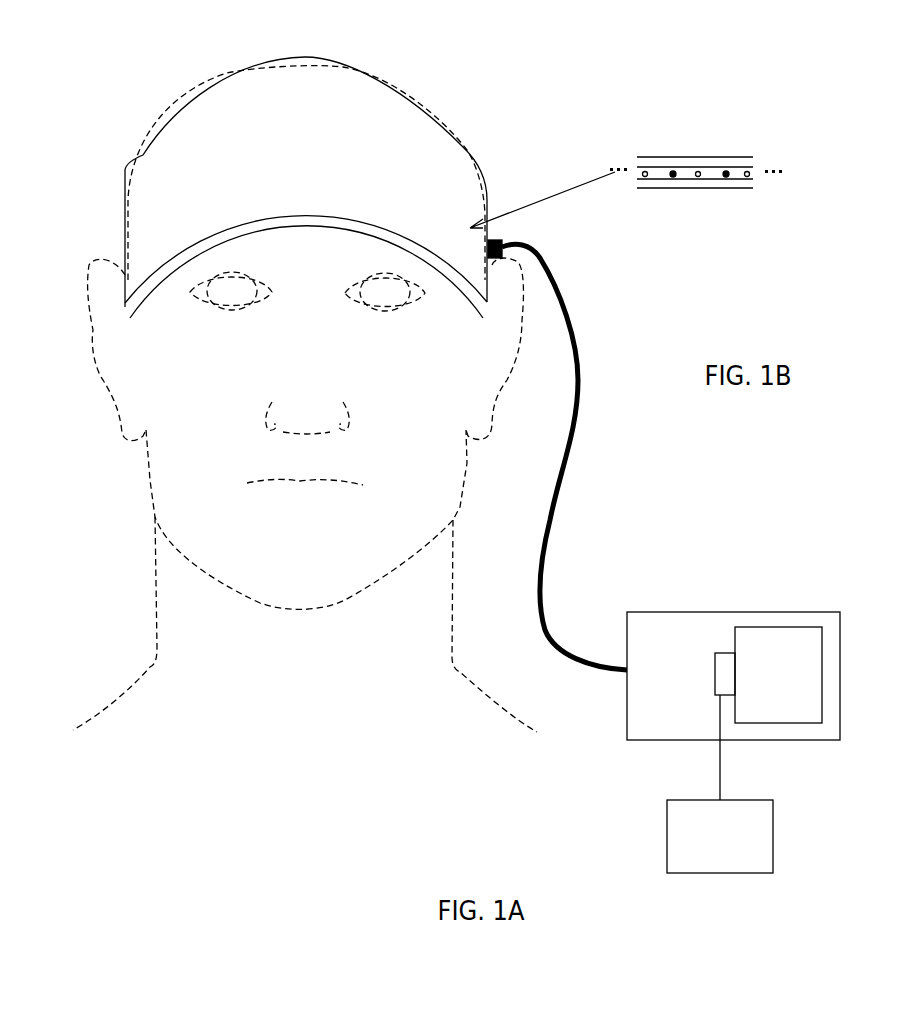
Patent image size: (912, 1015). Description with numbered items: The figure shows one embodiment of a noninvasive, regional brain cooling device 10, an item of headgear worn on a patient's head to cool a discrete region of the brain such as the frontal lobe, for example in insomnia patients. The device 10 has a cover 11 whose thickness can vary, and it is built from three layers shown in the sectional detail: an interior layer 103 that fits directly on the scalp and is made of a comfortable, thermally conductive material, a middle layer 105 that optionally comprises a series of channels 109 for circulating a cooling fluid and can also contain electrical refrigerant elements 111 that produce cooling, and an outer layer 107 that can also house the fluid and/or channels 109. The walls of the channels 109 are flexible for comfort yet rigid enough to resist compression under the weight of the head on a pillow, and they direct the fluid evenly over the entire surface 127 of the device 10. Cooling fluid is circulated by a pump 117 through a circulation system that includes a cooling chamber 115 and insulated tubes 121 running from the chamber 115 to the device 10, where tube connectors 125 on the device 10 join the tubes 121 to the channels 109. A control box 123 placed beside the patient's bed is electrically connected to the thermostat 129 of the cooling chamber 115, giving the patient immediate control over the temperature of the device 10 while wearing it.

In FIG. 1A, the device 10 is at (417, 73).
In FIG. 1A, the cover 11 is at (443, 208).
In FIG. 1A, the tube connectors 125 is at (502, 240).
In FIG. 1A, the insulated tubes 121 is at (570, 463).
In FIG. 1A, the pump 117 is at (661, 686).
In FIG. 1A, the cooling chamber 115 is at (766, 686).
In FIG. 1A, the thermostat 129 is at (717, 655).
In FIG. 1A, the control box 123 is at (702, 853).
In FIG. 1B, the outer layer 107 is at (743, 162).
In FIG. 1B, the surface 127 is at (660, 188).
In FIG. 1B, the interior layer 103 is at (670, 184).
In FIG. 1B, the electrical refrigerant elements 111 is at (725, 173).
In FIG. 1B, the channels 109 is at (698, 176).
In FIG. 1B, the middle layer 105 is at (738, 177).